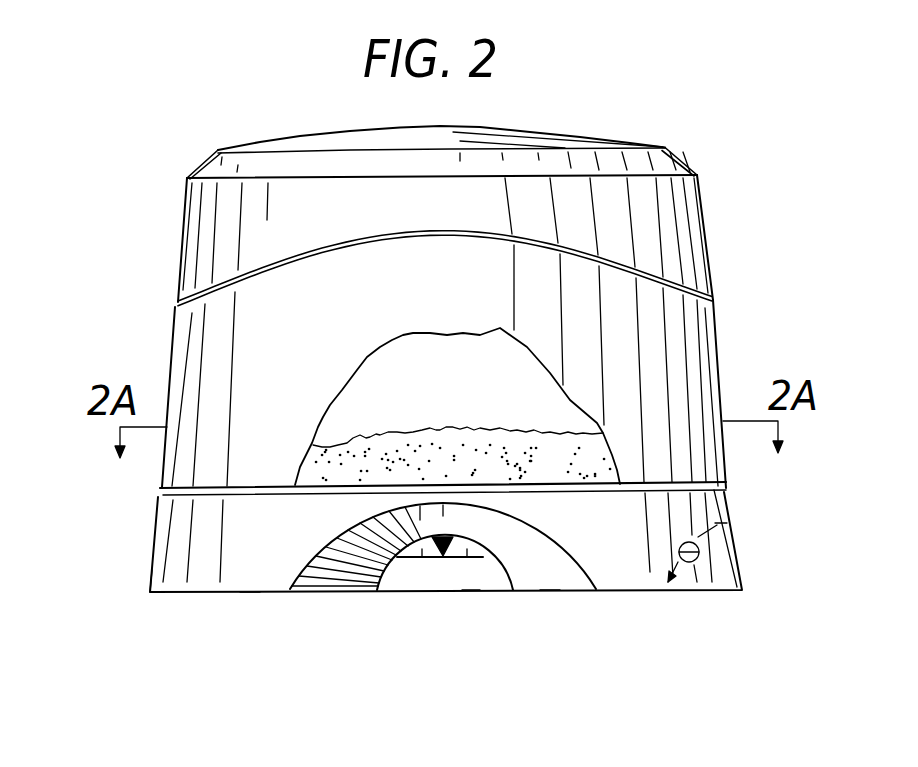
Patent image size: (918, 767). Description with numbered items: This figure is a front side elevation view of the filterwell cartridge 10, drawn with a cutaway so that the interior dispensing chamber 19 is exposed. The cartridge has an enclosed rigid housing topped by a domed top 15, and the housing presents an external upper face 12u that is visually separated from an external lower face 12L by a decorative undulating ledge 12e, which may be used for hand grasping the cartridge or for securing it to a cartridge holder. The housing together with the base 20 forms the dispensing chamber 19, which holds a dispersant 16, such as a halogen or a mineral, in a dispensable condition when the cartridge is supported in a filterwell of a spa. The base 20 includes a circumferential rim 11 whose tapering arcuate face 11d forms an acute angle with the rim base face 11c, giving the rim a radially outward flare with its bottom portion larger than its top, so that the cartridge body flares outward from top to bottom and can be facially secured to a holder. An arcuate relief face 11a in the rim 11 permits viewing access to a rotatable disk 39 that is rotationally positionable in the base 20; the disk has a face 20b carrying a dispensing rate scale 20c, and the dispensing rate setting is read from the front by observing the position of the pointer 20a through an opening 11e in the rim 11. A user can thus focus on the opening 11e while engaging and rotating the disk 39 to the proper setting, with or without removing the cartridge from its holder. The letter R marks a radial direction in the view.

The filterwell cartridge 10 is at (712, 122).
The circumferential rim 11 is at (735, 540).
The arcuate relief face 11a is at (547, 570).
The rim base face 11c is at (250, 596).
The arcuate face 11d is at (148, 573).
The opening 11e is at (471, 590).
The external upper face 12u is at (702, 203).
The decorative undulating ledge 12e is at (712, 300).
The external lower face 12L is at (708, 370).
The domed top 15 is at (547, 133).
The dispersant 16 is at (451, 427).
The dispensing chamber 19 is at (427, 397).
The base 20 is at (623, 590).
The pointer 20a is at (452, 557).
The face 20b is at (417, 587).
The dispensing rate scale 20c is at (435, 586).
The rotatable disk 39 is at (398, 593).
The radius direction R is at (157, 545).